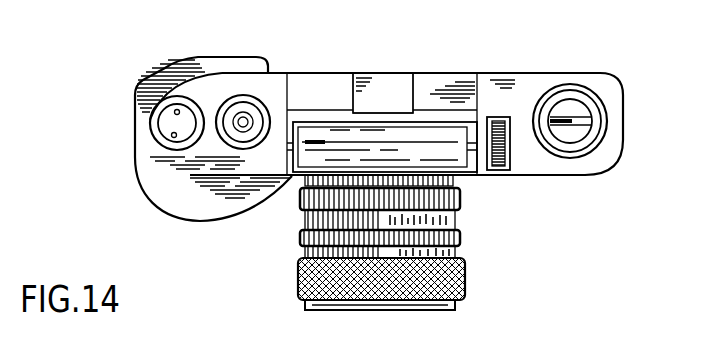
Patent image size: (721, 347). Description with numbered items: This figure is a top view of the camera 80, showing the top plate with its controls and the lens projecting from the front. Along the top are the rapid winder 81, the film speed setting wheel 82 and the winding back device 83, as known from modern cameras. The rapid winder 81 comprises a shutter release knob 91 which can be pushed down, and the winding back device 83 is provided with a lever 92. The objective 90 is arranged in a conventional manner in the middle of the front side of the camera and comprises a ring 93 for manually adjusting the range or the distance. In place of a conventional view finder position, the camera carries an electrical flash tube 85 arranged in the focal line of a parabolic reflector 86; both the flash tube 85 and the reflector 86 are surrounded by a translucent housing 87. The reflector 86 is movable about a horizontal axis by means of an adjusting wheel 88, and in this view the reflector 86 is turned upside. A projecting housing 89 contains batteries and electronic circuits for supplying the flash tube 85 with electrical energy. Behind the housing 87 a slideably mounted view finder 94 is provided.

The camera 80 is at (572, 191).
The rapid winder 81 is at (155, 113).
The film speed setting wheel 82 is at (243, 110).
The winding back device 83 is at (598, 112).
The electrical flash tube 85 is at (323, 143).
The parabolic reflector 86 is at (317, 157).
The translucent housing 87 is at (458, 200).
The adjusting wheel 88 is at (510, 150).
The projecting housing 89 is at (182, 205).
The objective 90 is at (405, 320).
The shutter release knob 91 is at (165, 131).
The lever 92 is at (576, 118).
The ring 93 is at (298, 279).
The view finder 94 is at (389, 88).